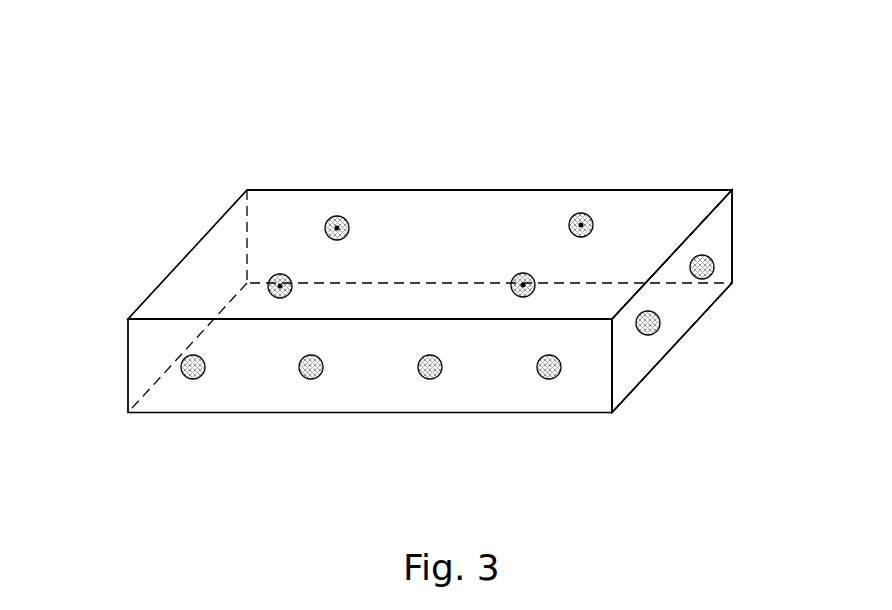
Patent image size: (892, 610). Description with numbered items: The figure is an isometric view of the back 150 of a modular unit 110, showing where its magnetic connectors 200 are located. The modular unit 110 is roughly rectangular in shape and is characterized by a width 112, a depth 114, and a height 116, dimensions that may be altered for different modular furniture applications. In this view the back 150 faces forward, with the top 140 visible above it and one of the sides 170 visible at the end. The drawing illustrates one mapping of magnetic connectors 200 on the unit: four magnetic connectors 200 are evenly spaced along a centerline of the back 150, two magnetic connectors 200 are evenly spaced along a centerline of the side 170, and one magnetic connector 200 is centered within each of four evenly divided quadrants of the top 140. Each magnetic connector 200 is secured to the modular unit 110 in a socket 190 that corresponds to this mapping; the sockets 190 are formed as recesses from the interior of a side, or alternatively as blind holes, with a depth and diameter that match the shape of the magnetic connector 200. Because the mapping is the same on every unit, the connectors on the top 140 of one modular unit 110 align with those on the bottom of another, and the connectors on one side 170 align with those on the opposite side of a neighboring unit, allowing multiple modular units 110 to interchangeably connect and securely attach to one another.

The modular unit 110 is at (122, 194).
The width 112 is at (332, 190).
The top 140 is at (448, 207).
The height 116 is at (735, 237).
The depth 114 is at (716, 307).
The back 150 is at (252, 400).
The side 170 is at (629, 379).
The magnetic connector 200 is at (585, 214).
The socket 190 is at (570, 233).